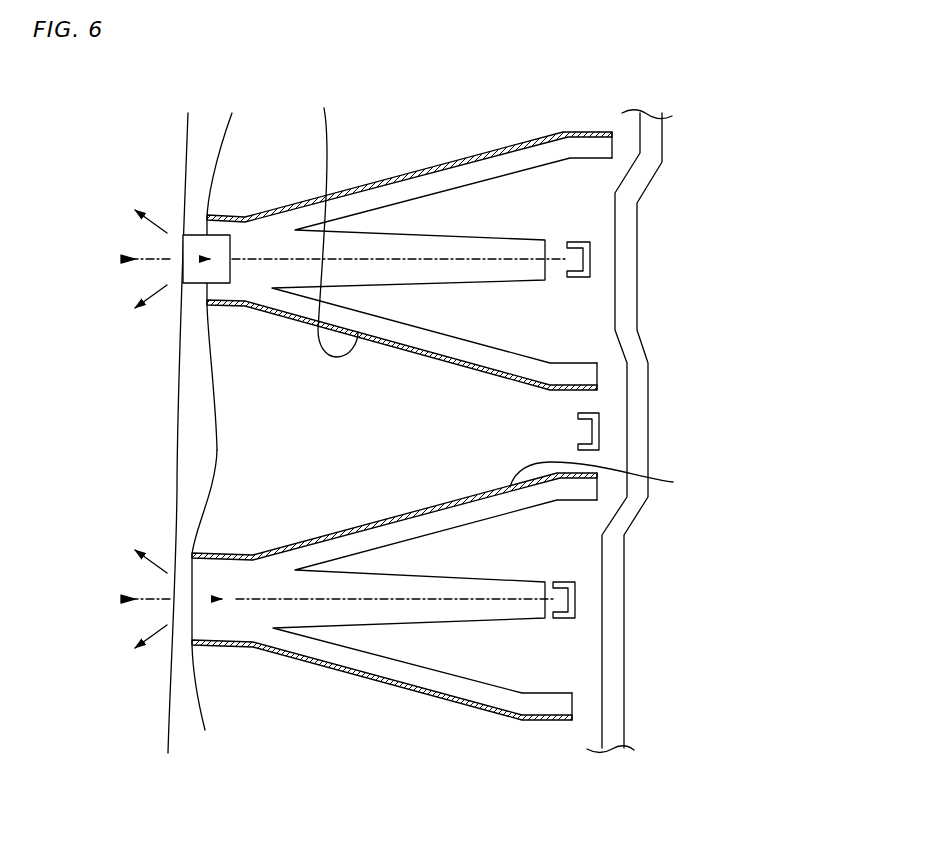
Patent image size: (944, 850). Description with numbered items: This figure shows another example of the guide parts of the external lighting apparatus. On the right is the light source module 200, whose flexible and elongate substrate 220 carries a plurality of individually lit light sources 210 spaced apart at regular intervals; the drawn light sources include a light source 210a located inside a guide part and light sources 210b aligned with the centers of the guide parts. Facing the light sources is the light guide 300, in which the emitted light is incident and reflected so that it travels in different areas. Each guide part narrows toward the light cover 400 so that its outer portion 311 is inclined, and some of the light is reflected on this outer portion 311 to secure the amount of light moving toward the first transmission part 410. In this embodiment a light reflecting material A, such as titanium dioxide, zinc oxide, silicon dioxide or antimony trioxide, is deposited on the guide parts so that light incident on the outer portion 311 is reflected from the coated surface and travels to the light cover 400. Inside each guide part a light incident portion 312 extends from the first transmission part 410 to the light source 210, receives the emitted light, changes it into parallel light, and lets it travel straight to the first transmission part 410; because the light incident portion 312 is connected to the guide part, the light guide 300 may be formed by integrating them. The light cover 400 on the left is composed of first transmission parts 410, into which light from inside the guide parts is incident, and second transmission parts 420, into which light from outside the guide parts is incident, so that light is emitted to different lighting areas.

The light cover 400 is at (142, 433).
The first transmission part 410 is at (185, 630).
The second transmission part 420 is at (193, 457).
The light guide 300 is at (366, 446).
The outer portion 311 is at (413, 345).
The light incident portion 312 is at (460, 250).
The light source module 200 is at (705, 431).
The substrate 220 is at (625, 213).
The light source 210 is at (669, 430).
The light source located inside the guide part 210a is at (599, 430).
The light source 210b is at (590, 258).
The light reflecting material A is at (503, 290).